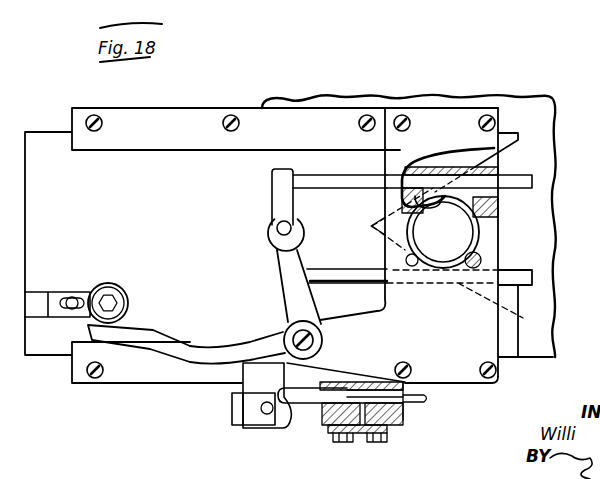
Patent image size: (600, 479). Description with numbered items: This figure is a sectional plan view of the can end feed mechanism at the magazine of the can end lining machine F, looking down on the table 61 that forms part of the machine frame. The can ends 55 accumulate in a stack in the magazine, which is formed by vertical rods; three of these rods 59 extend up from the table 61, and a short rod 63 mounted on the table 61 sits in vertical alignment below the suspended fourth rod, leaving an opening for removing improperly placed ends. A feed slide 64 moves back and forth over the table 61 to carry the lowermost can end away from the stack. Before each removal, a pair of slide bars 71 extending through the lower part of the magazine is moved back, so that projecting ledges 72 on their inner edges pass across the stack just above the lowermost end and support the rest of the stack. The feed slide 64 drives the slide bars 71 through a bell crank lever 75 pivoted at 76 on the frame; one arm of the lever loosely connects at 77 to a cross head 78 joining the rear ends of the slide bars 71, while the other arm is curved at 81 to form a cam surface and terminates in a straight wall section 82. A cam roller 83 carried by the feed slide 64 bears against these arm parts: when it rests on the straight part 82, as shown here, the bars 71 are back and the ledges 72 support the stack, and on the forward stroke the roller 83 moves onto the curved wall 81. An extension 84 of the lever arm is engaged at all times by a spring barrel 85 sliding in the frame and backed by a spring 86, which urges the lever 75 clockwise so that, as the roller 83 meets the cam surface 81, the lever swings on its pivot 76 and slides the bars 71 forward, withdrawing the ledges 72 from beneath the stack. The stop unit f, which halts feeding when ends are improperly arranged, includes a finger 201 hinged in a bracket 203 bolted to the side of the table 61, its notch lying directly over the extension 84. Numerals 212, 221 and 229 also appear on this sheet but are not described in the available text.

The can ends 55 is at (443, 232).
The rods 59 is at (482, 263).
The table 61 is at (553, 253).
The short rod 63 is at (412, 268).
The feed slide 64 is at (261, 245).
The slide bars 71 is at (342, 188).
The projecting ledges 72 is at (476, 192).
The bell crank lever 75 is at (287, 298).
The pivot 76 is at (296, 335).
The loose connection 77 is at (279, 229).
The cross head 78 is at (277, 176).
The curved cam surface 81 is at (182, 341).
The straight wall section 82 is at (131, 326).
The cam roller 83 is at (112, 294).
The extension 84 is at (282, 430).
The spring barrel 85 is at (306, 405).
The spring 86 is at (365, 434).
The finger 201 is at (236, 412).
The bracket 203 is at (408, 403).
The member 212 is at (590, 21).
The member 221 is at (599, 54).
The member 229 is at (586, 84).
The can end lining machine F is at (554, 148).
The stop unit f is at (212, 414).